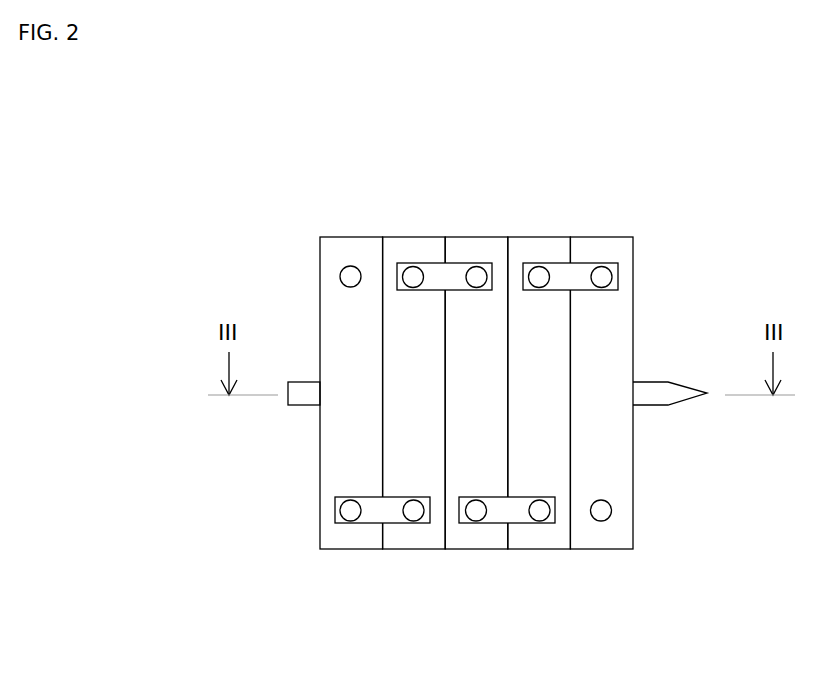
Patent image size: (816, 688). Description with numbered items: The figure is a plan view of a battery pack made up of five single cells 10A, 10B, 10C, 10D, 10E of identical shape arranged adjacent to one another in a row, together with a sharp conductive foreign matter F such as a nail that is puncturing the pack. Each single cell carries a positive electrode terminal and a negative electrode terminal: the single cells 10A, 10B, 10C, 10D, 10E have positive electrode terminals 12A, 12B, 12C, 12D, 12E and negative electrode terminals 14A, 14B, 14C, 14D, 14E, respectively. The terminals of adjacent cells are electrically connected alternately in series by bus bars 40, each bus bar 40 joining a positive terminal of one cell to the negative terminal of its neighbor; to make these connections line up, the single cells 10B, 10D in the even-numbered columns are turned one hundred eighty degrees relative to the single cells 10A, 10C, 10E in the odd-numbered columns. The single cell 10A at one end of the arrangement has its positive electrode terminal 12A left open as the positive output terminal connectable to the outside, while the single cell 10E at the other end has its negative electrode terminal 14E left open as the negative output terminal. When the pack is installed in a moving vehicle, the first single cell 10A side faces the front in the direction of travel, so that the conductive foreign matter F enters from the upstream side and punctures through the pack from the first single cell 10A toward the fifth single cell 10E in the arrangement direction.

The first single cell 10A is at (340, 553).
The second single cell 10B is at (422, 553).
The third single cell 10C is at (483, 553).
The fourth single cell 10D is at (538, 553).
The fifth single cell 10E is at (601, 553).
The positive electrode terminal 12A is at (350, 265).
The positive electrode terminal 12B is at (413, 522).
The positive electrode terminal 12C is at (477, 266).
The positive electrode terminal 12D is at (540, 522).
The positive electrode terminal 12E is at (601, 266).
The negative electrode terminal 14A is at (349, 522).
The negative electrode terminal 14B is at (413, 266).
The negative electrode terminal 14C is at (476, 522).
The negative electrode terminal 14D is at (539, 266).
The negative electrode terminal 14E is at (601, 522).
The bus bar 40 is at (435, 263).
The conductive foreign matter F is at (650, 382).